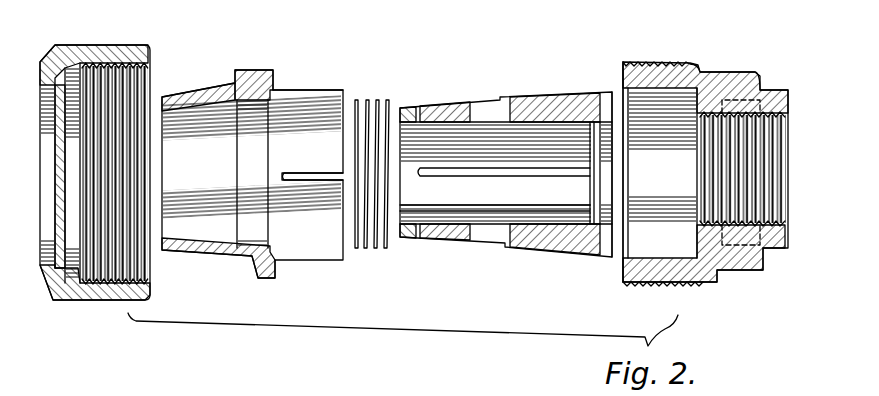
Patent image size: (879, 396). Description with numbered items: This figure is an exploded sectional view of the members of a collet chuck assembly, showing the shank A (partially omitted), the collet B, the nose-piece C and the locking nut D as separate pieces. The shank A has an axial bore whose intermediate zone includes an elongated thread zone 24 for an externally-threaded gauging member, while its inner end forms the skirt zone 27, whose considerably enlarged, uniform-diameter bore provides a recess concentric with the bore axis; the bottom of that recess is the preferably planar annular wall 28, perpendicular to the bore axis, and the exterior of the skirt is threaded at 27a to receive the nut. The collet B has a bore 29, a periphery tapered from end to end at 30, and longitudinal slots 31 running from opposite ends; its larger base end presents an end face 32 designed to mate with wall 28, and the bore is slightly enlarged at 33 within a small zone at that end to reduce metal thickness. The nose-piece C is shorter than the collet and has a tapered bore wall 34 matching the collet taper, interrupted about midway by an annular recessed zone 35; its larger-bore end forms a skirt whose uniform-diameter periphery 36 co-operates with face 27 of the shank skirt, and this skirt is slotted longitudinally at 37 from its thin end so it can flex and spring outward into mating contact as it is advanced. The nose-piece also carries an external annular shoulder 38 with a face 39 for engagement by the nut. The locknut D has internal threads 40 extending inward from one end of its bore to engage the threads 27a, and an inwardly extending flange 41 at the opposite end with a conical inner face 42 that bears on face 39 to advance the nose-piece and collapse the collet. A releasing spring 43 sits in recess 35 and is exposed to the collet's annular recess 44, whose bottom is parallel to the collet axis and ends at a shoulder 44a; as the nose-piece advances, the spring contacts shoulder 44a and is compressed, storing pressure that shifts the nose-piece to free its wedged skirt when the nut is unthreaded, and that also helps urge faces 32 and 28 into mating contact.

The locking ring or nut D is at (118, 45).
The nose-piece C is at (262, 71).
The collet B is at (540, 97).
The shank member A is at (712, 62).
The elongated thread zone 24 is at (787, 216).
The skirt zone 27 is at (624, 260).
The threaded exterior of skirt zone 27a is at (640, 284).
The annular bottom wall 28 is at (698, 242).
The collet bore 29 is at (462, 195).
The tapered periphery 30 is at (428, 108).
The longitudinal slots 31 is at (558, 178).
The end face of collet base end 32 is at (616, 103).
The increased bore diameter zone 33 is at (602, 222).
The tapered bore wall 34 is at (200, 238).
The annular recessed zone 35 is at (246, 249).
The skirt periphery 36 is at (315, 90).
The skirt slots 37 is at (321, 158).
The external annular shoulder 38 is at (272, 74).
The shoulder face 39 is at (251, 81).
The internal threads 40 is at (146, 264).
The inwardly extending flange 41 is at (58, 270).
The conical inner face of flange 42 is at (76, 292).
The releasing spring 43 is at (386, 250).
The annular recess of collet 44 is at (492, 245).
The shoulder 44a is at (500, 104).